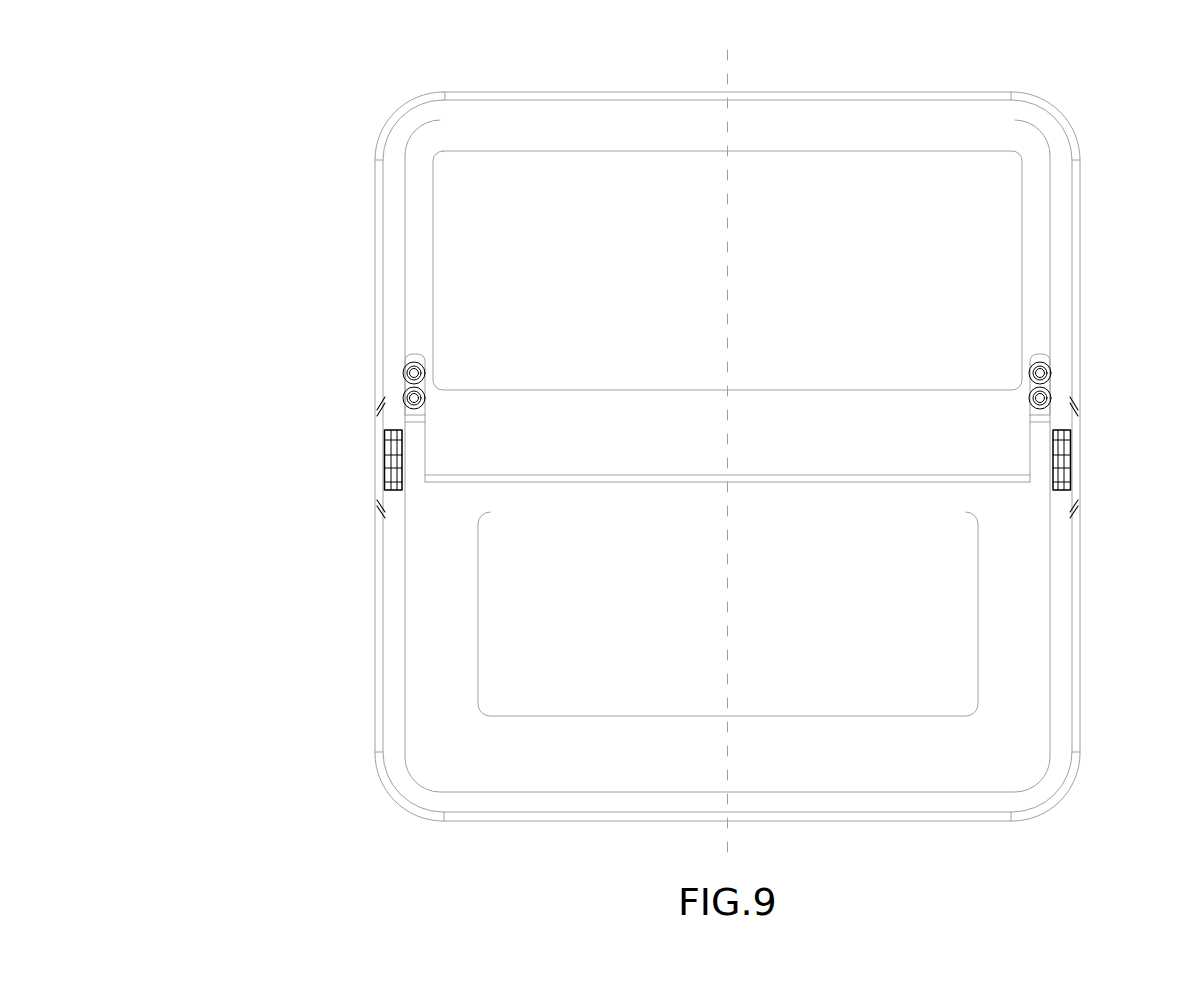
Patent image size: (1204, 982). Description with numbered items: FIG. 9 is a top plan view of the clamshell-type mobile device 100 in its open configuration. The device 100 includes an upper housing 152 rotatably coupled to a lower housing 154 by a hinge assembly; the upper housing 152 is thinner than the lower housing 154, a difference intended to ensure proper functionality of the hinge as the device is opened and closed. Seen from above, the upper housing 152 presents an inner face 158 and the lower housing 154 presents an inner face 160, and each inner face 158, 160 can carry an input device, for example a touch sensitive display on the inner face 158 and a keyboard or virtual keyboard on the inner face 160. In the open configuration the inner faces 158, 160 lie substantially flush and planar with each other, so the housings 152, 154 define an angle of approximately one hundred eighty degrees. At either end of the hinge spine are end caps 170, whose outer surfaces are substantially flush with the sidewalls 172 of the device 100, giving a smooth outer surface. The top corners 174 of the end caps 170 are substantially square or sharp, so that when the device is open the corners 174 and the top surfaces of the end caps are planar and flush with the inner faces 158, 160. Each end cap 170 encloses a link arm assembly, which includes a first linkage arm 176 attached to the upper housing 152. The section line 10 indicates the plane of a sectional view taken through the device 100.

The section line 10- 10 is at (716, 64).
The mobile device 100 is at (282, 135).
The upper housing 152 is at (1018, 81).
The lower housing 154 is at (1086, 800).
The inner face of upper housing 158 is at (1045, 218).
The inner face of lower housing 160 is at (1038, 630).
The end caps 170 is at (378, 485).
The sidewalls 172 is at (376, 310).
The top corners of end caps 174 is at (374, 403).
The first linkage arm 176 is at (1048, 385).